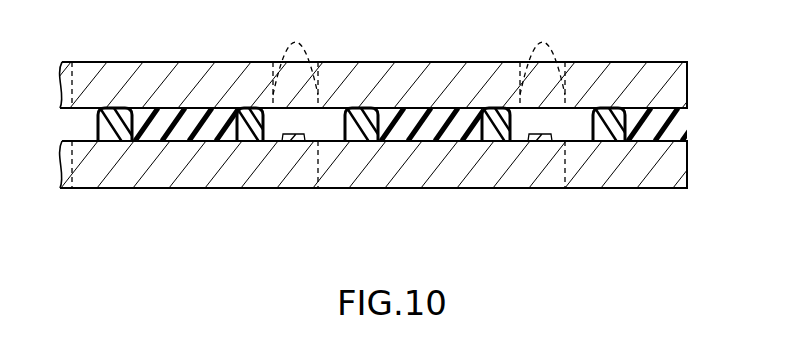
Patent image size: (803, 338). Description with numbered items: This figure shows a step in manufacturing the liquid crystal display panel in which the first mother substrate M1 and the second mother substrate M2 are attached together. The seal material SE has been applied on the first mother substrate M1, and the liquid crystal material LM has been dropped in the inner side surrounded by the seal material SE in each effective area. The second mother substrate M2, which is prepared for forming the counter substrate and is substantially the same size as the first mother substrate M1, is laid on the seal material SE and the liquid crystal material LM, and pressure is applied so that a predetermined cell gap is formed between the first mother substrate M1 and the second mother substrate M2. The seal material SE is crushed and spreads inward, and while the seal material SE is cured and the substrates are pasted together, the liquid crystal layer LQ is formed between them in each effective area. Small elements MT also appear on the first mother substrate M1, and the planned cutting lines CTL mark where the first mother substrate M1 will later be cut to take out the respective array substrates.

The first mother substrate M1 is at (690, 165).
The second mother substrate M2 is at (690, 83).
The seal material SE is at (118, 143).
The liquid crystal material LM is at (182, 143).
The liquid crystal layer LQ is at (433, 166).
The metal pattern MT is at (295, 142).
The planned cutting line CTL is at (58, 75).